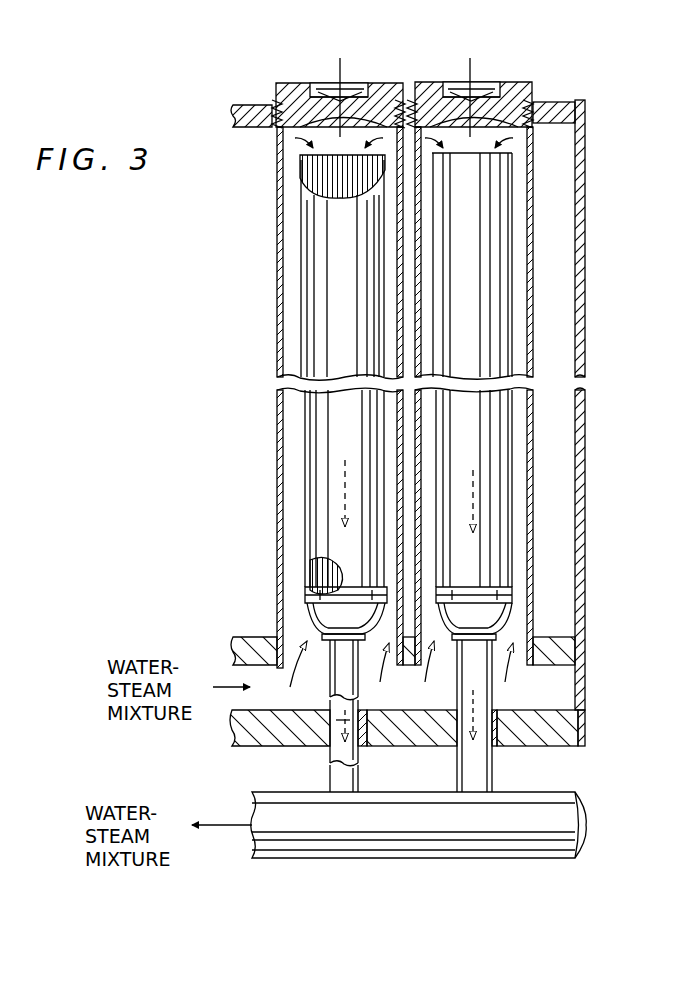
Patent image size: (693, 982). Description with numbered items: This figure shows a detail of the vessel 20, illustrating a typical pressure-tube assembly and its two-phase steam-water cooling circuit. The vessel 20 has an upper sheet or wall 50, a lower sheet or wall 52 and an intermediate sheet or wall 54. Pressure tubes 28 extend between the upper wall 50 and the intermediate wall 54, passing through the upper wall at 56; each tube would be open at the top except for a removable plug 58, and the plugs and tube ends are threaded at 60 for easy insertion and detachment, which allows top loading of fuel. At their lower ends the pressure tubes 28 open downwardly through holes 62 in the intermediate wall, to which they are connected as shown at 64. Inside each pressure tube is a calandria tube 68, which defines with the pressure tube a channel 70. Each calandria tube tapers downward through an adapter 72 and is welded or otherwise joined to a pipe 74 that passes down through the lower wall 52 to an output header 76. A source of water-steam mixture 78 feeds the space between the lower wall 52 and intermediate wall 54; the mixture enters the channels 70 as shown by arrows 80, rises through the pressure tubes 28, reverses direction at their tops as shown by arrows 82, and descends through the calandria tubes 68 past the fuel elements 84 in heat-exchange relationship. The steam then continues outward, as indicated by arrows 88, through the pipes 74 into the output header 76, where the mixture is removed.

The vessel 20 is at (586, 232).
The pressure tube 28 is at (277, 343).
The upper sheet or wall 50 is at (558, 104).
The lower sheet or wall 52 is at (567, 718).
The intermediate sheet or wall 54 is at (562, 635).
The tube extension through upper wall 56 is at (268, 130).
The removable plug 58 is at (277, 99).
The threads 60 is at (272, 104).
The holes 62 is at (534, 666).
The connection of pressure tube to intermediate wall 64 is at (538, 633).
The calandria tube 68 is at (302, 495).
The channel 70 is at (288, 276).
The adapter 72 is at (310, 617).
The pipe 74 is at (340, 684).
The output header 76 is at (417, 848).
The source of water-steam mixture 78 is at (228, 690).
The arrows 80 is at (308, 640).
The arrows 82 is at (305, 133).
The fuel elements 84 is at (322, 174).
The arrows 88 is at (340, 721).